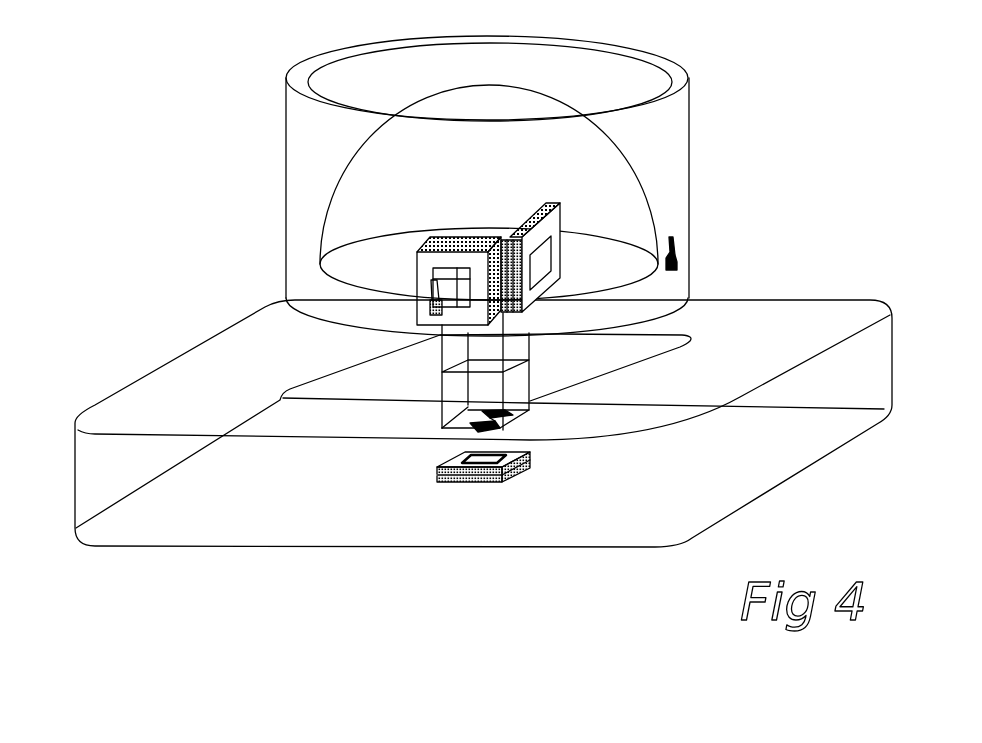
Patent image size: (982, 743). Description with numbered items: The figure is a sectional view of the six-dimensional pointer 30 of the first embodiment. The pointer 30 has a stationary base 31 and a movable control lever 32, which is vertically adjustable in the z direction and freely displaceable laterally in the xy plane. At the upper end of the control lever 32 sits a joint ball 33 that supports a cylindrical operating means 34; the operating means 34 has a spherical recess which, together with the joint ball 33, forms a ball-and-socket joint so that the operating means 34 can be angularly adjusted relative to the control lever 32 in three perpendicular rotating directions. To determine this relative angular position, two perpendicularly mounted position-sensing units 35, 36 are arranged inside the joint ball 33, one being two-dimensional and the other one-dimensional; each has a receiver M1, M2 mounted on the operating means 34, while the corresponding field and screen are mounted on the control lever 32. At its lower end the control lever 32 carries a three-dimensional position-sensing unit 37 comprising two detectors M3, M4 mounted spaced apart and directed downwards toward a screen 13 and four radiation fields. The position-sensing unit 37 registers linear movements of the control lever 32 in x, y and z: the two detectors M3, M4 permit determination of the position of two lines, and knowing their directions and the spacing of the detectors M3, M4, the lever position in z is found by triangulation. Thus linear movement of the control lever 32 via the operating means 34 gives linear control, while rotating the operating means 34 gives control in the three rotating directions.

The six-dimensional pointer 30 is at (555, 179).
The stationary base 31 is at (828, 300).
The control lever 32 is at (532, 350).
The joint ball 33 is at (368, 153).
The cylindrical operating means 34 is at (297, 189).
The position-sensing unit 35 is at (420, 312).
The position-sensing unit 36 is at (572, 238).
The three-dimensional position-sensing unit 37 is at (445, 471).
The screen 13 is at (438, 450).
The receiver M1 is at (436, 314).
The receiver M2 is at (676, 254).
The detector M3 is at (583, 445).
The detector M4 is at (500, 425).